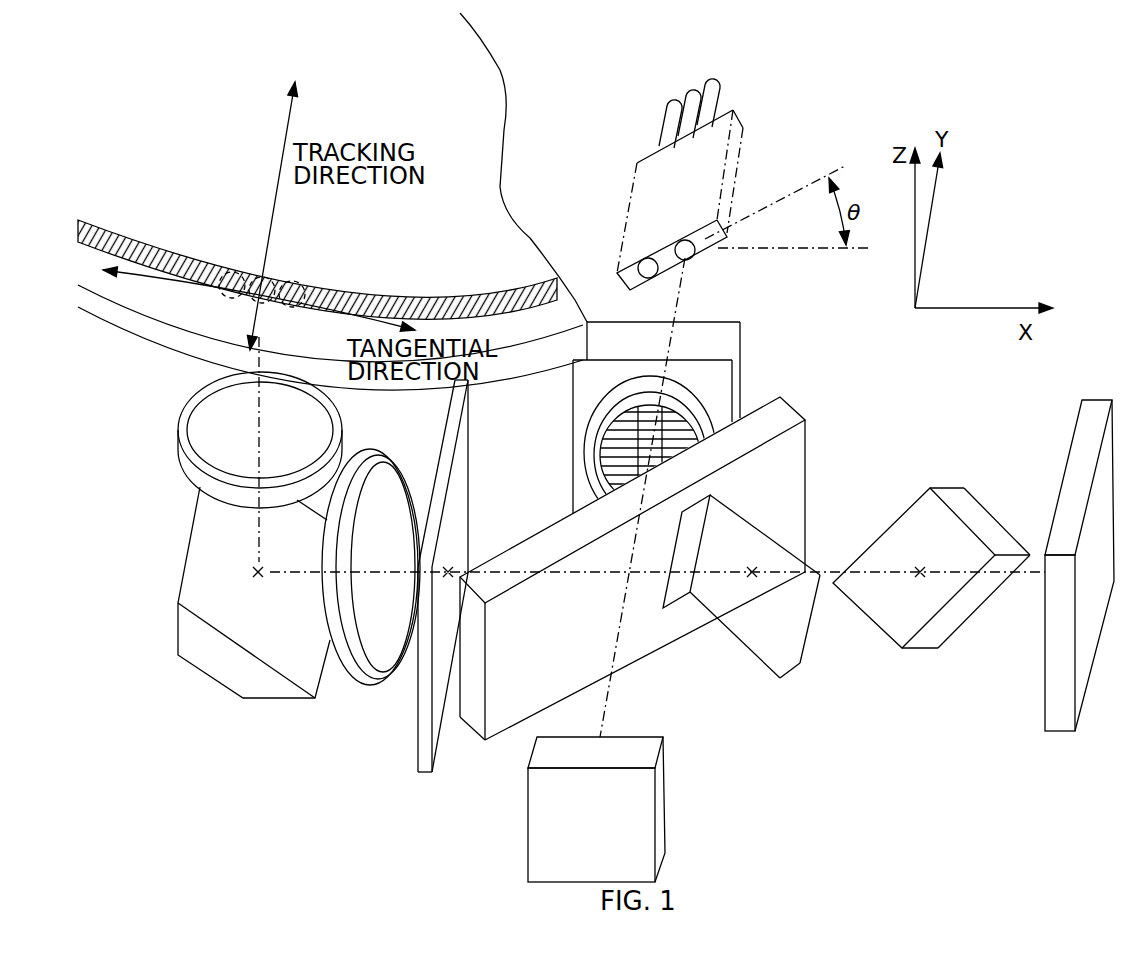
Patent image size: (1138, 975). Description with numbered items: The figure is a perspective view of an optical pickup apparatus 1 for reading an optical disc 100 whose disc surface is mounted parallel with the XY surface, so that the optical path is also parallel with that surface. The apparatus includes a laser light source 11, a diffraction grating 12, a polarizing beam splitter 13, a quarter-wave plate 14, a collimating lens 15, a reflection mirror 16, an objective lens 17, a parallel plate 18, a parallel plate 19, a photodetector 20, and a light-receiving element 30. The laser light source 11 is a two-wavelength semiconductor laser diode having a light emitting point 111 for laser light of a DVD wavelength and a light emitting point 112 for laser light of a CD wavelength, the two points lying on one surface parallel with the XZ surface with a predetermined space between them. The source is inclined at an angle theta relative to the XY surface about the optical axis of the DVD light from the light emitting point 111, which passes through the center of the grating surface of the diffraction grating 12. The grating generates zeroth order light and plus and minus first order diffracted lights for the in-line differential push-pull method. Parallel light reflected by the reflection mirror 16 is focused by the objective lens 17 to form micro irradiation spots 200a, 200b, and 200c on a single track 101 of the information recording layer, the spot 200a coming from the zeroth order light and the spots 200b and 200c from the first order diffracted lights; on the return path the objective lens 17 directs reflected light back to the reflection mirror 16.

The optical pickup apparatus 1 is at (881, 771).
The laser light source 11 is at (752, 157).
The diffraction grating 12 is at (684, 408).
The polarizing beam splitter 13 is at (782, 398).
The quarter-wave plate 14 is at (426, 774).
The collimating lens 15 is at (366, 686).
The reflection mirror 16 is at (266, 703).
The objective lens 17 is at (178, 420).
The parallel plate 18 is at (786, 678).
The parallel plate 19 is at (925, 650).
The photodetector 20 is at (1063, 733).
The light-receiving element 30 is at (667, 808).
The optical disc 100 is at (497, 66).
The track 101 is at (426, 282).
The light emitting point 111 is at (688, 260).
The light emitting point 112 is at (636, 262).
The irradiation spot 200a is at (276, 269).
The irradiation spot 200b is at (218, 257).
The irradiation spot 200c is at (312, 275).